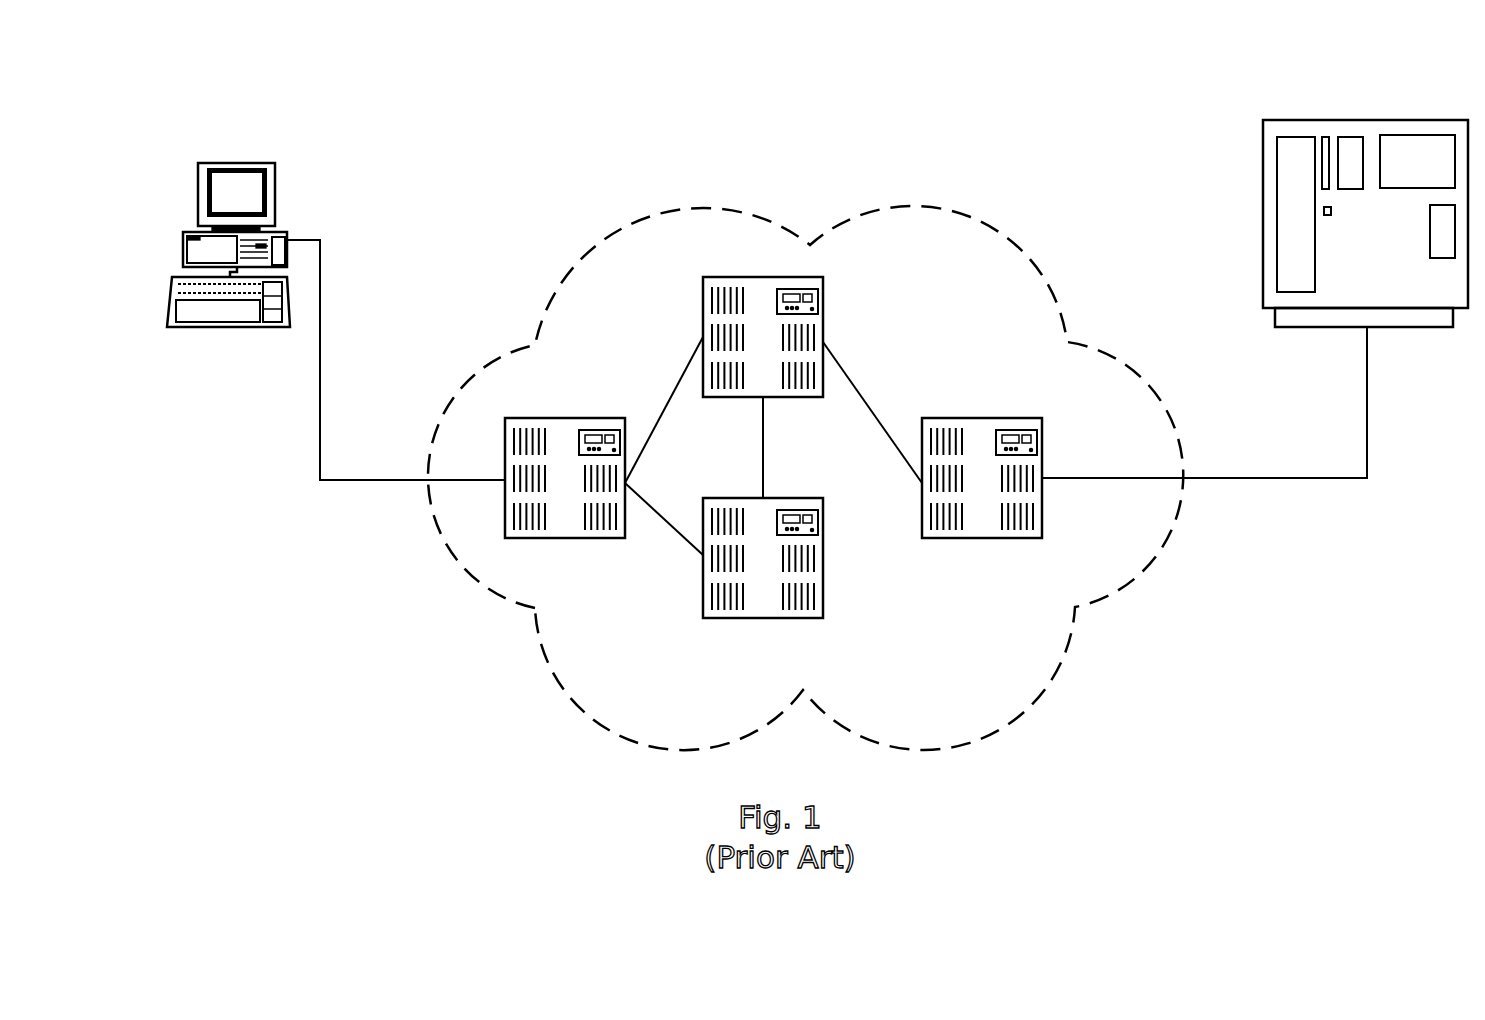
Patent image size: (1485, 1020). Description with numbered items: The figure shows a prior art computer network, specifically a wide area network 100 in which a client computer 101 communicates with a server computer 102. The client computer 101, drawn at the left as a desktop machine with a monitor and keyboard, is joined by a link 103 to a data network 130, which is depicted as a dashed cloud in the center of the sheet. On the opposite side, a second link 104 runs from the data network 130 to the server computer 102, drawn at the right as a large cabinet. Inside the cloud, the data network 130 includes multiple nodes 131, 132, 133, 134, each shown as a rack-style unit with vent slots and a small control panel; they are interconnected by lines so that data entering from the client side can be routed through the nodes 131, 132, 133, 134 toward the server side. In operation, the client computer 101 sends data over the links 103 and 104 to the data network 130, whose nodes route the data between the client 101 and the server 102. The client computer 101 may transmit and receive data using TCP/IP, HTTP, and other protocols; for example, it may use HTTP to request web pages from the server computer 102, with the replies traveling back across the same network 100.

The wide area network 100 is at (808, 85).
The client computer 101 is at (235, 163).
The server computer 102 is at (1367, 120).
The link 103 is at (396, 360).
The link 104 is at (1204, 411).
The data network 130 is at (645, 208).
The node 131 is at (563, 418).
The node 132 is at (703, 285).
The node 133 is at (790, 500).
The node 134 is at (983, 418).